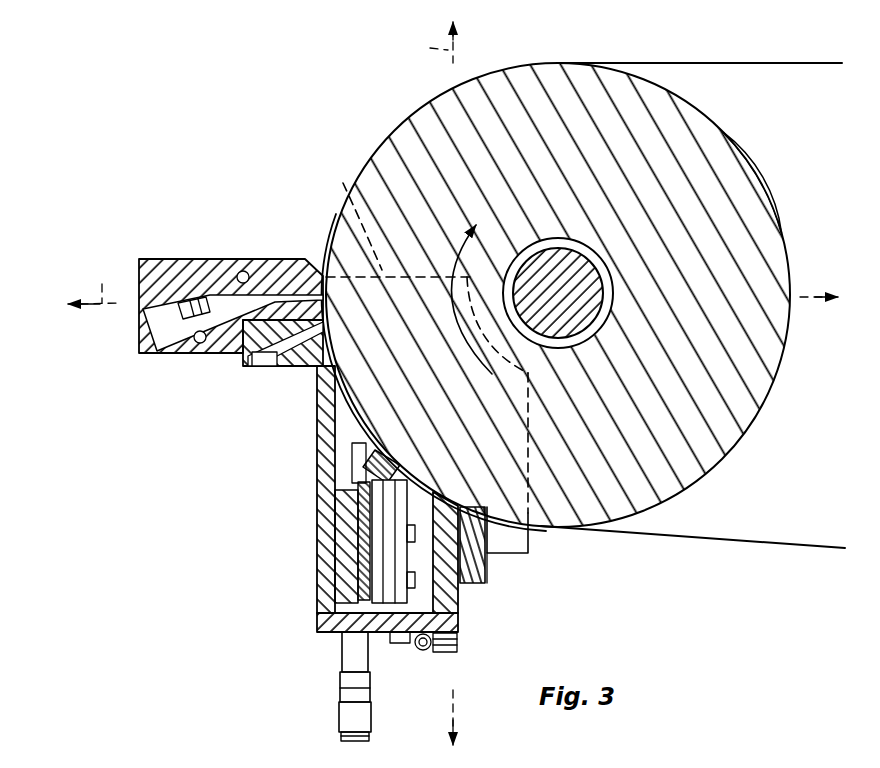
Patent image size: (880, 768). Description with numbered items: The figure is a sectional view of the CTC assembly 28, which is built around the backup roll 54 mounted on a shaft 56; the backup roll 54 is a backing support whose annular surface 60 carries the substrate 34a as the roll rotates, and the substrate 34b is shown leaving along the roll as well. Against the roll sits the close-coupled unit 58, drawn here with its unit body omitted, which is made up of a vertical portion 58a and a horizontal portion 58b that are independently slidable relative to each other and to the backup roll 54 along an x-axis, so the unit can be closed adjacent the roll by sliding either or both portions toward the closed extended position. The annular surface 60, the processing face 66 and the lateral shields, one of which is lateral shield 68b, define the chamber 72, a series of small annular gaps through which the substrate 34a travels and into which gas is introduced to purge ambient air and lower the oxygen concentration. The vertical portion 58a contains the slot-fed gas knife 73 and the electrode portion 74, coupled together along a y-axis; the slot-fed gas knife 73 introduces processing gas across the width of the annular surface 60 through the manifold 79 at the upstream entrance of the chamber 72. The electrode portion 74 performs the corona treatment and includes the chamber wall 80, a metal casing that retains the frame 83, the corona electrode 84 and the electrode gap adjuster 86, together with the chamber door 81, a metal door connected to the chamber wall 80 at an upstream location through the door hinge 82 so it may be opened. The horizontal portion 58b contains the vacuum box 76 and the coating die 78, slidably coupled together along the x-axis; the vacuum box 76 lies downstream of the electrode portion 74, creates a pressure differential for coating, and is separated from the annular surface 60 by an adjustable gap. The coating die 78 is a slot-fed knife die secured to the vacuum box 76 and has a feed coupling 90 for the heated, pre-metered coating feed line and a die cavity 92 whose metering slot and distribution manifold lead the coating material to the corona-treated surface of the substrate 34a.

The CTC assembly 28 is at (456, 382).
The substrate 34a is at (718, 538).
The belt upper run 34b is at (723, 63).
The backup roll 54 is at (579, 295).
The shaft 56 is at (586, 261).
The close-coupled unit 58 is at (315, 464).
The vertical portion 58a is at (394, 553).
The horizontal portion 58b is at (206, 308).
The annular surface 60 is at (742, 150).
The processing face 66 is at (398, 434).
The lateral shield 68b is at (343, 185).
The chamber 72 is at (340, 428).
The slot-fed gas knife 73 is at (477, 583).
The electrode portion 74 is at (394, 553).
The vacuum box 76 is at (243, 363).
The coating die 78 is at (206, 278).
The manifold 79 is at (474, 558).
The chamber wall 80 is at (319, 527).
The chamber door 81 is at (448, 603).
The door hinge 82 is at (455, 652).
The frame 83 is at (393, 595).
The corona electrode 84 is at (365, 457).
The electrode gap adjuster 86 is at (344, 718).
The feed coupling 90 is at (153, 323).
The die cavity 92 is at (270, 297).